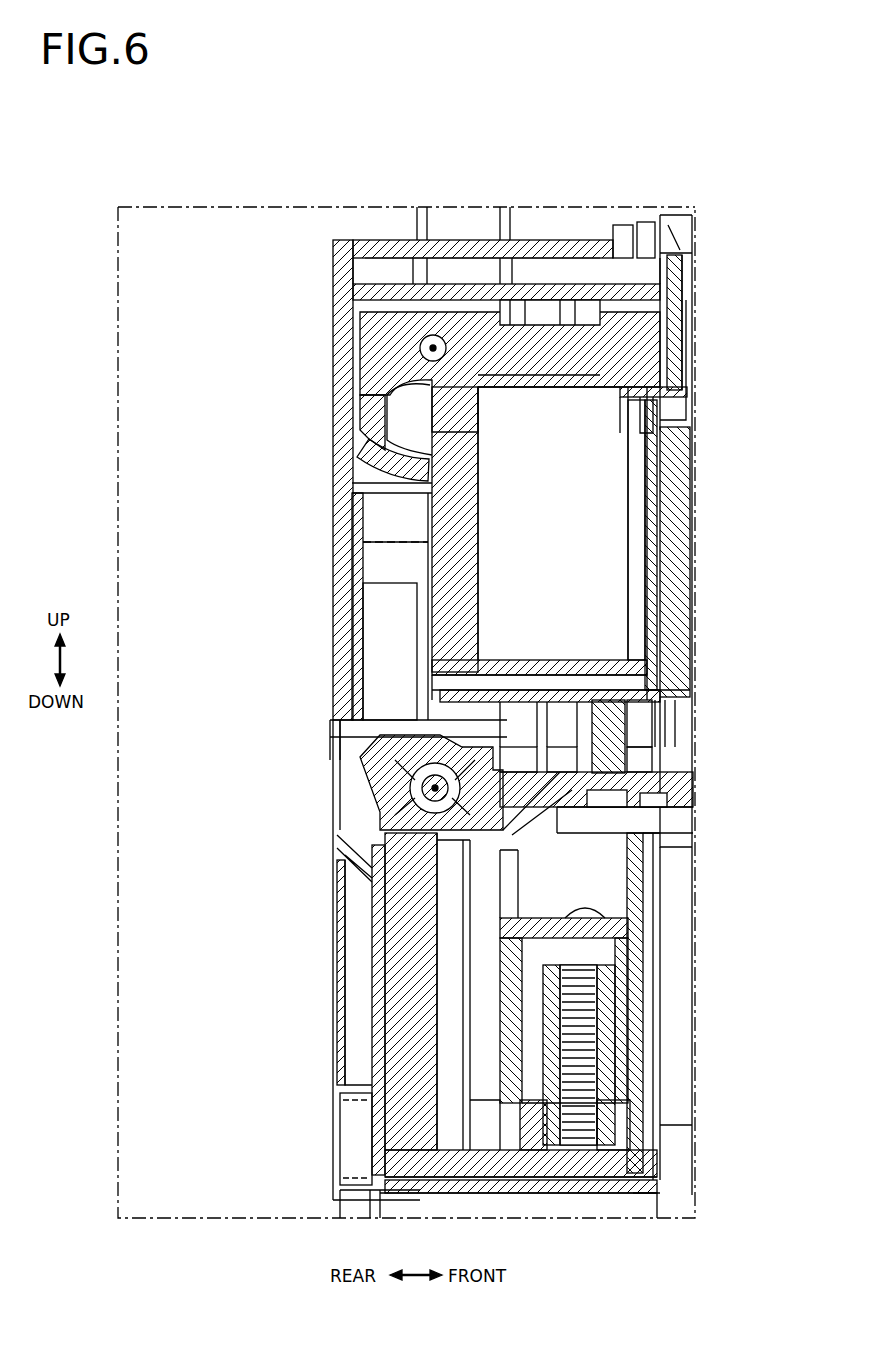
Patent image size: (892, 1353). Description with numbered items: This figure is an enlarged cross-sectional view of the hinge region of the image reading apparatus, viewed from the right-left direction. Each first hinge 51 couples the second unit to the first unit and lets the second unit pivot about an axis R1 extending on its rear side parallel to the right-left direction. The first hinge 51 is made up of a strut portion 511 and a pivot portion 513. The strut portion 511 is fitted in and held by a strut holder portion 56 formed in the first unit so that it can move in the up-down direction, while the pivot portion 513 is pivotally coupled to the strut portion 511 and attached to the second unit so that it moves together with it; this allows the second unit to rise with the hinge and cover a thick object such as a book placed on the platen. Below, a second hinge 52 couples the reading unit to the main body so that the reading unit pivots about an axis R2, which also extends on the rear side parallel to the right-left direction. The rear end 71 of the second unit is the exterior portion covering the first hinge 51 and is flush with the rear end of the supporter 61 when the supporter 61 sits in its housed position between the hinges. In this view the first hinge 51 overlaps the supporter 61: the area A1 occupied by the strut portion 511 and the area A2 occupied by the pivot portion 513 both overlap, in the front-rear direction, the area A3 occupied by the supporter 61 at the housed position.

The supporter 61 is at (335, 230).
The rear end of the second unit 71 is at (335, 293).
The first hinge 51 is at (358, 344).
The axis R1 is at (433, 348).
The pivot portion 513 is at (541, 382).
The strut holder portion 56 is at (662, 556).
The strut portion 511 is at (447, 565).
The second hinge 52 is at (393, 760).
The axis R2 is at (435, 788).
The area A1 is at (434, 460).
The area A2 is at (348, 480).
The area A3 is at (613, 255).